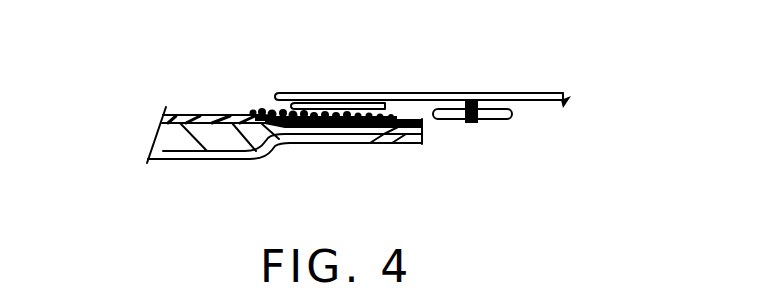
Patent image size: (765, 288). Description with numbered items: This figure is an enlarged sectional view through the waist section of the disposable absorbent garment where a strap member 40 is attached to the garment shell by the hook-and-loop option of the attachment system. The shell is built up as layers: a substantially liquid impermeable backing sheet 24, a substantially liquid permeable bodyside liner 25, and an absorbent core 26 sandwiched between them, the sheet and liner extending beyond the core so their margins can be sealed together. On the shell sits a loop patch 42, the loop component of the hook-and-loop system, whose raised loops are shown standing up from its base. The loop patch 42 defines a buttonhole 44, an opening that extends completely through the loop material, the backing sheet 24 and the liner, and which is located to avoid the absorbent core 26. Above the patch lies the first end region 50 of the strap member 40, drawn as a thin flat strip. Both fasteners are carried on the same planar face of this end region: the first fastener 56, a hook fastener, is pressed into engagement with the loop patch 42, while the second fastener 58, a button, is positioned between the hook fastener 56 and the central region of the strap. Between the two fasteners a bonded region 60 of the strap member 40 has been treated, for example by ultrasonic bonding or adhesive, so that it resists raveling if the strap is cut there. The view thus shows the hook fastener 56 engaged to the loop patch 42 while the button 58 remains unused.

The backing sheet 24 is at (187, 112).
The bodyside liner 25 is at (187, 165).
The absorbent core 26 is at (160, 128).
The strap member 40 is at (538, 93).
The loop patch 42 is at (258, 110).
The buttonhole 44 is at (363, 146).
The first end region 50 is at (497, 88).
The first fastener 56 is at (337, 102).
The second fastener 58 is at (492, 119).
The bonded region 60 is at (423, 88).